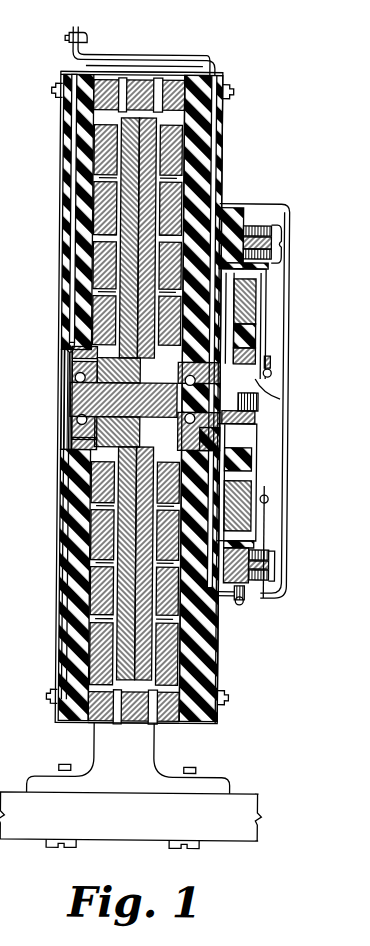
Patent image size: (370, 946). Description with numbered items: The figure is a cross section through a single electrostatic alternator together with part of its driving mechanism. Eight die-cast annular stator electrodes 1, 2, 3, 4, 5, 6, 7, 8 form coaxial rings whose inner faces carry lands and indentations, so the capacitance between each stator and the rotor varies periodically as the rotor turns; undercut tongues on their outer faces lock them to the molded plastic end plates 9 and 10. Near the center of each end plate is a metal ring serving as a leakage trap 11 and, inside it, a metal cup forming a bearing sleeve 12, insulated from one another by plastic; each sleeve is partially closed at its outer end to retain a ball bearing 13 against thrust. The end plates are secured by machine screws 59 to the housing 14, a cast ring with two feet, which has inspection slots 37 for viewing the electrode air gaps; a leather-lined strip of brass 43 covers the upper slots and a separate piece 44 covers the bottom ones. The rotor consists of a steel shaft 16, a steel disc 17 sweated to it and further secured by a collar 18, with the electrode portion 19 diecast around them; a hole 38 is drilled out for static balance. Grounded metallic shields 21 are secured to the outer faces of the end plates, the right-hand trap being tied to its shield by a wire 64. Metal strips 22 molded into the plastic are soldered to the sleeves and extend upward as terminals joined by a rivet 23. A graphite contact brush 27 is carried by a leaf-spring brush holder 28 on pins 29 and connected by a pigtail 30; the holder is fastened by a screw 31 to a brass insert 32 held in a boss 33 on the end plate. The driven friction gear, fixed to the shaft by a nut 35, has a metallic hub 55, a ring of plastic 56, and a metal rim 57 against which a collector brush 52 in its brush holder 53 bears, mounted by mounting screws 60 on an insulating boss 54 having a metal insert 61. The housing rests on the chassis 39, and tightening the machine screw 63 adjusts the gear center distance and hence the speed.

The stator electrode 1 is at (88, 153).
The stator electrode 2 is at (98, 190).
The stator electrode 3 is at (90, 262).
The stator electrode 4 is at (103, 320).
The stator electrode 5 is at (182, 328).
The stator electrode 6 is at (187, 272).
The stator electrode 7 is at (187, 182).
The stator electrode 8 is at (187, 155).
The end plate 9 is at (80, 118).
The end plate 10 is at (203, 136).
The leakage trap 11 is at (103, 447).
The bearing sleeve 12 is at (82, 423).
The ball bearing 13 is at (78, 387).
The housing 14 is at (147, 87).
The shaft 16 is at (130, 337).
The disc 17 is at (138, 202).
The collar 18 is at (78, 338).
The rotor 19 is at (128, 165).
The metallic shield 21 is at (62, 238).
The metal strip 22 is at (67, 50).
The rivet 23 is at (84, 35).
The contact brush 27 is at (280, 398).
The brush holder 28 is at (270, 347).
The pin 29 is at (271, 372).
The pigtail 30 is at (270, 358).
The screw 31 is at (280, 258).
The brass insert 32 is at (263, 270).
The boss 33 is at (230, 213).
The nut 35 is at (243, 418).
The inspection slot 37 is at (123, 82).
The hole 38 is at (203, 118).
The chassis 39 is at (131, 781).
The strip of brass 43 is at (170, 77).
The piece 44 is at (100, 725).
The collector brush 52 is at (270, 503).
The brush holder 53 is at (273, 490).
The insulating boss 54 is at (270, 582).
The metallic hub 55 is at (253, 437).
The ring of plastic 56 is at (287, 463).
The rim 57 is at (262, 524).
The machine screw 59 is at (49, 92).
The mounting screw 60 is at (270, 570).
The metal insert 61 is at (230, 605).
The machine screw 63 is at (173, 845).
The wire 64 is at (253, 533).